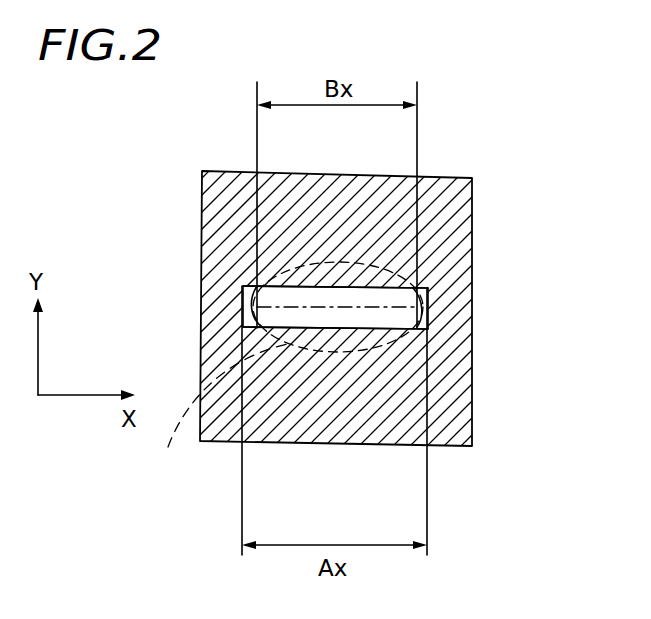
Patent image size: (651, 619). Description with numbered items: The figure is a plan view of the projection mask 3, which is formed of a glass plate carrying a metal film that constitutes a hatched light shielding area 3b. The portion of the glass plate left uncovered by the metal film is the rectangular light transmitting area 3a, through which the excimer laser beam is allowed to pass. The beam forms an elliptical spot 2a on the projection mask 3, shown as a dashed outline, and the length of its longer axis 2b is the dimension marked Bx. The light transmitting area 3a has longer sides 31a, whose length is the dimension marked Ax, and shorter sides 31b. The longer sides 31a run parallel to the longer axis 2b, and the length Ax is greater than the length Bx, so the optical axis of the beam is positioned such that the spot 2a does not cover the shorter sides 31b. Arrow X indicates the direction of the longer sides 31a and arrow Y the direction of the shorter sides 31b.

The projection mask 3 is at (485, 152).
The light transmitting area 3a is at (437, 313).
The light shielding area 3b is at (458, 398).
The longer sides 31a is at (348, 290).
The shorter sides 31b is at (243, 309).
The spot 2a is at (180, 428).
The longer axis 2b is at (323, 310).